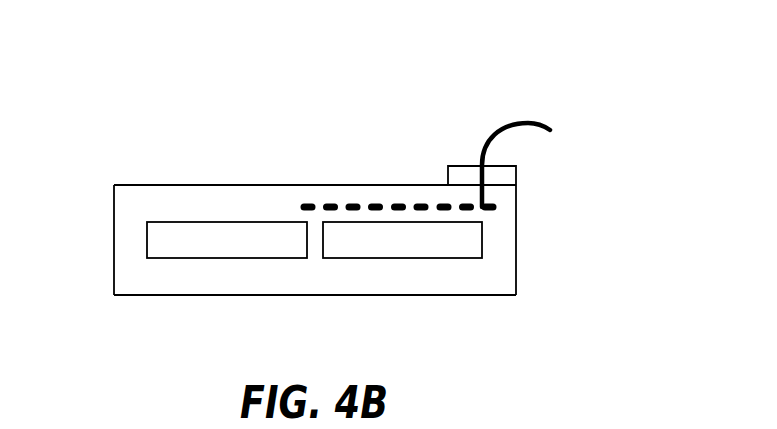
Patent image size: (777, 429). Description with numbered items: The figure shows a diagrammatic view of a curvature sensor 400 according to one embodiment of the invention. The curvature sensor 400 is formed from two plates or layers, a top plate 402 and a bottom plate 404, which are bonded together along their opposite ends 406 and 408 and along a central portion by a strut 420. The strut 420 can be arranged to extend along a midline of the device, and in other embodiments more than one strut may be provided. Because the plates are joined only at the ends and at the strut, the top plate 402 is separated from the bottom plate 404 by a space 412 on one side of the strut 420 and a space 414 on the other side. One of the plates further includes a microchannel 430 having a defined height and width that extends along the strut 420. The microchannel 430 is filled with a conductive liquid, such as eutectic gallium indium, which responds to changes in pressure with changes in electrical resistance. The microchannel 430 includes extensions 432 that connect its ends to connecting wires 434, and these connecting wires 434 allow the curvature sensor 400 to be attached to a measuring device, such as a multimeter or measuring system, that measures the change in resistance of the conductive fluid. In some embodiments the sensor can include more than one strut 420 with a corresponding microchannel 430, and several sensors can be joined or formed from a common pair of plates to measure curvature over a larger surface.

The curvature sensor 400 is at (180, 139).
The top plate 402 is at (232, 203).
The bottom plate 404 is at (332, 282).
The end 406 is at (132, 249).
The end 408 is at (498, 243).
The space 412 is at (198, 242).
The space 414 is at (415, 242).
The strut 420 is at (314, 240).
The microchannel 430 is at (312, 203).
The extension 432 is at (440, 203).
The connecting wire 434 is at (515, 118).